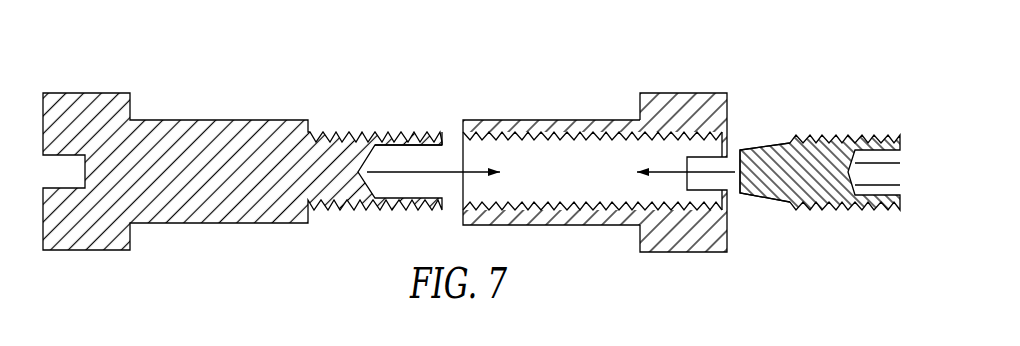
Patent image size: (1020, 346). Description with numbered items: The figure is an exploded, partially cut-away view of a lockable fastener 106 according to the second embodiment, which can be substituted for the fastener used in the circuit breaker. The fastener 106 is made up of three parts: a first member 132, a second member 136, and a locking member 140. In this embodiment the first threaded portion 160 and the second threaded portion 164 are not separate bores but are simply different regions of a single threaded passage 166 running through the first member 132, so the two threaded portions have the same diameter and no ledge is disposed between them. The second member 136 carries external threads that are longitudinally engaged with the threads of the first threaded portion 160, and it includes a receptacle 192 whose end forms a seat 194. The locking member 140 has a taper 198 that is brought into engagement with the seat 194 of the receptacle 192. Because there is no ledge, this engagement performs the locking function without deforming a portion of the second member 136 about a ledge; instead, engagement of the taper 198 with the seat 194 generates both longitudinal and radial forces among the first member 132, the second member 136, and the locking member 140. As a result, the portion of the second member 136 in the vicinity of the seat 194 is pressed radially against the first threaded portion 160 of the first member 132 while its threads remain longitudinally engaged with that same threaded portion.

The fastener 106 is at (595, 127).
The first member 132 is at (667, 92).
The second member 136 is at (245, 144).
The locking member 140 is at (820, 131).
The first threaded portion 160 is at (519, 142).
The second threaded portion 164 is at (670, 143).
The threaded passage 166 is at (593, 143).
The receptacle 192 is at (400, 147).
The seat 194 is at (446, 148).
The taper 198 is at (762, 144).